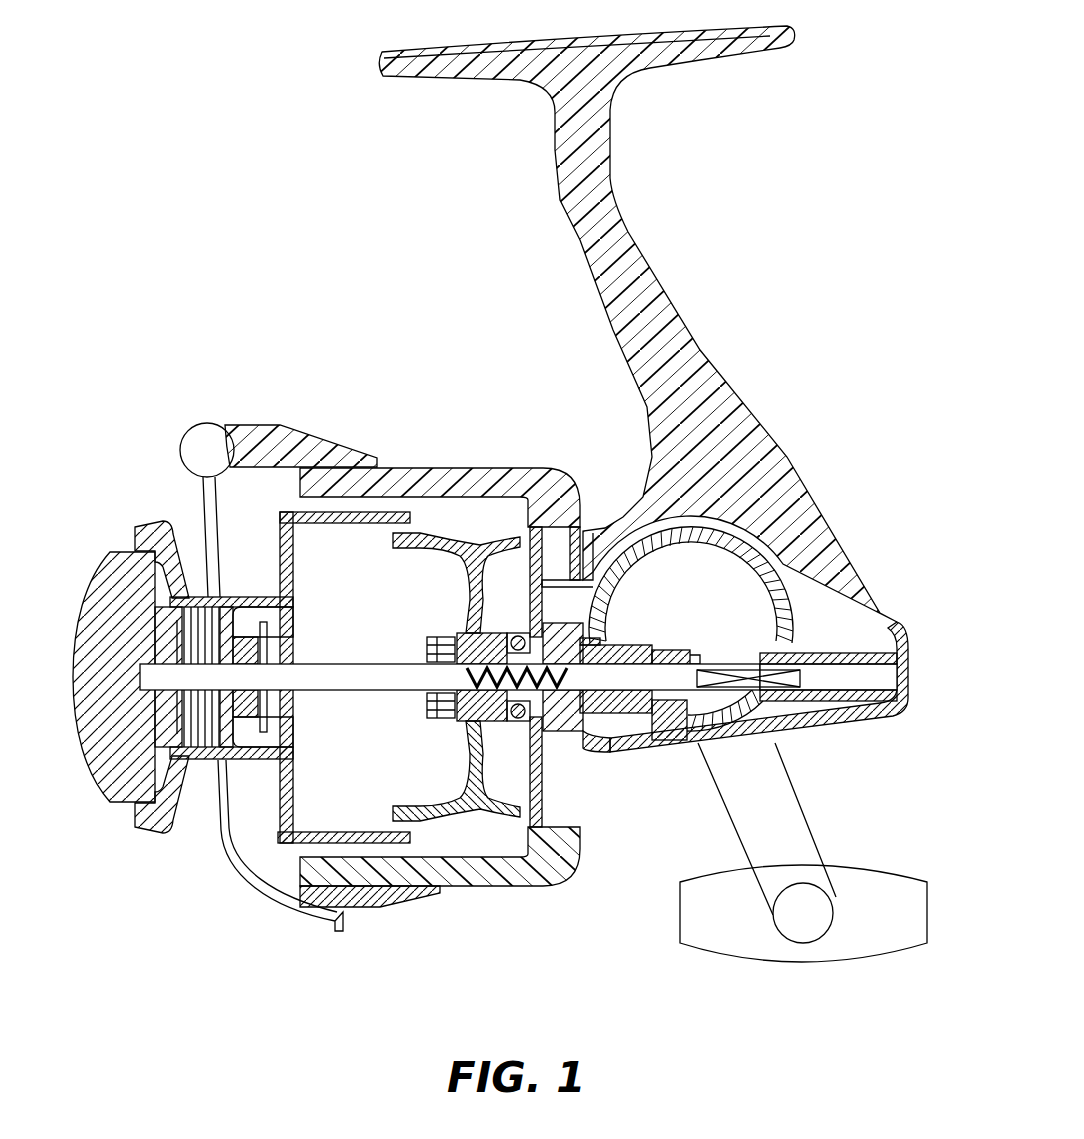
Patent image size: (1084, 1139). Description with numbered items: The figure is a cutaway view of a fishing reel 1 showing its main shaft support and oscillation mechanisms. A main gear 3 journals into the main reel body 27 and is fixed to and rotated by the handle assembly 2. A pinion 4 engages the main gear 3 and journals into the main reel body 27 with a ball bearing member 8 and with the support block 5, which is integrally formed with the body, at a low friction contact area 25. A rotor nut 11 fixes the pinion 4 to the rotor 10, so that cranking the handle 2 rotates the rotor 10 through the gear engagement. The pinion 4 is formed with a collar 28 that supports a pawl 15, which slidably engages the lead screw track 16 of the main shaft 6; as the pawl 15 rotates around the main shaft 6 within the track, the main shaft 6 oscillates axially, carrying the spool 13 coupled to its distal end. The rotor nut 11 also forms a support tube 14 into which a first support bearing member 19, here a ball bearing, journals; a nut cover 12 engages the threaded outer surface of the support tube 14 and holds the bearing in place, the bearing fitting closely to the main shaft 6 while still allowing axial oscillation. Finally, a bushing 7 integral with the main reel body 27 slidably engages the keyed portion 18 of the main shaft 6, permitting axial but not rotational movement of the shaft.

The fishing reel 1 is at (640, 389).
The handle assembly 2 is at (787, 827).
The main gear 3 is at (767, 575).
The pinion 4 is at (623, 653).
The support block 5 is at (680, 652).
The main shaft 6 is at (698, 664).
The bushing 7 is at (893, 630).
The ball bearing member 8 is at (523, 633).
The rotor 10 is at (472, 633).
The rotor nut 11 is at (467, 707).
The nut cover 12 is at (428, 652).
The spool 13 is at (327, 520).
The support tube 14 is at (447, 637).
The pawl 15 is at (562, 637).
The lead screw track 16 is at (536, 637).
The keyed portion 18 is at (777, 690).
The first support bearing member 19 is at (440, 690).
The low friction contact area 25 is at (677, 740).
The main reel body 27 is at (793, 495).
The collar 28 is at (573, 715).